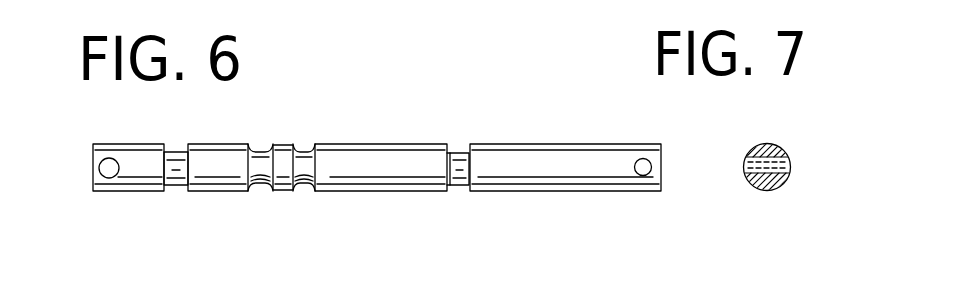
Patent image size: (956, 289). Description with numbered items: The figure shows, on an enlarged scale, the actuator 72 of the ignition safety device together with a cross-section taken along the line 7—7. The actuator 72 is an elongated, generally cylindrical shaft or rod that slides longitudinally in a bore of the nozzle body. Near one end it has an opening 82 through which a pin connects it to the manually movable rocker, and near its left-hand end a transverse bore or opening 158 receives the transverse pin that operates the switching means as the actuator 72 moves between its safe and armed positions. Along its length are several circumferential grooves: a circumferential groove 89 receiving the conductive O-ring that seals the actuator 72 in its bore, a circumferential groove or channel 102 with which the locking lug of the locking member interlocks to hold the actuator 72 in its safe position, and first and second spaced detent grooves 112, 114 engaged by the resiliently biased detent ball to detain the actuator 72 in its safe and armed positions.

In FIG. 6, the section line 7— 7 is at (75, 118).
In FIG. 6, the actuator 72 is at (545, 143).
In FIG. 7, the actuator 72 is at (769, 155).
In FIG. 6, the opening 82 is at (645, 176).
In FIG. 6, the circumferential groove 89 is at (455, 150).
In FIG. 6, the circumferential groove or channel 102 is at (168, 191).
In FIG. 6, the first circumferential detent groove 112 is at (262, 147).
In FIG. 6, the second circumferential detent groove 114 is at (302, 152).
In FIG. 6, the transverse bore or opening 158 is at (99, 168).
In FIG. 7, the transverse bore or opening 158 is at (783, 167).